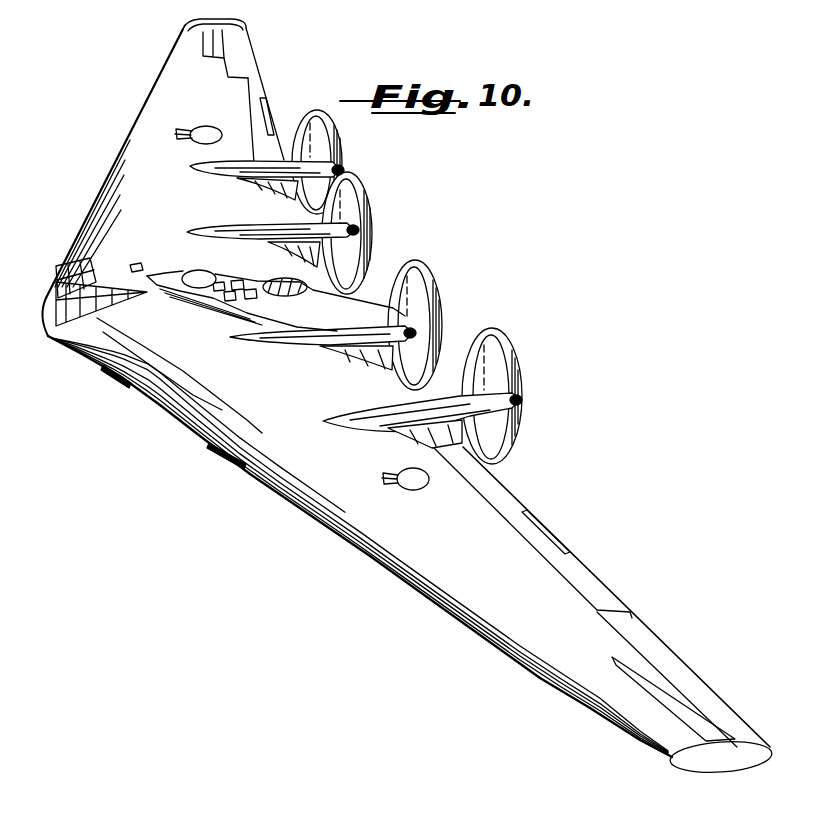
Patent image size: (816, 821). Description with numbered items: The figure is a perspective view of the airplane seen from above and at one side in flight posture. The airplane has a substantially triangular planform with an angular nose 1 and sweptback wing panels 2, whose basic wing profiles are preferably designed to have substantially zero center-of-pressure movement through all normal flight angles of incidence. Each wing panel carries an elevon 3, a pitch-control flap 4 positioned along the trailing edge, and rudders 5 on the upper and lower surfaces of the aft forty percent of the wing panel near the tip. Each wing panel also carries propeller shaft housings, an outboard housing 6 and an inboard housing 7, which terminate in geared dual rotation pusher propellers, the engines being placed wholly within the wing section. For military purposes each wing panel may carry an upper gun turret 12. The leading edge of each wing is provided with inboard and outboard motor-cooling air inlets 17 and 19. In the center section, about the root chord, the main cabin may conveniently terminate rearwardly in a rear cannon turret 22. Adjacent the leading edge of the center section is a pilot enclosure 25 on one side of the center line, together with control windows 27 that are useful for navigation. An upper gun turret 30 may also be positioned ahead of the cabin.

The angular nose 1 is at (42, 320).
The sweptback wing panels 2 is at (158, 208).
The elevon 3 is at (255, 93).
The pitch-control flap 4 is at (242, 58).
The rudders 5 is at (200, 39).
The outboard housing 6 is at (291, 127).
The inboard housing 7 is at (283, 224).
The upper gun turret 12 is at (205, 128).
The inboard motor-cooling air inlet 17 is at (116, 381).
The outboard motor-cooling air inlet 19 is at (222, 452).
The rear cannon turret 22 is at (380, 280).
The pilot enclosure 25 is at (53, 322).
The control windows 27 is at (58, 282).
The upper gun turret 30 is at (199, 271).